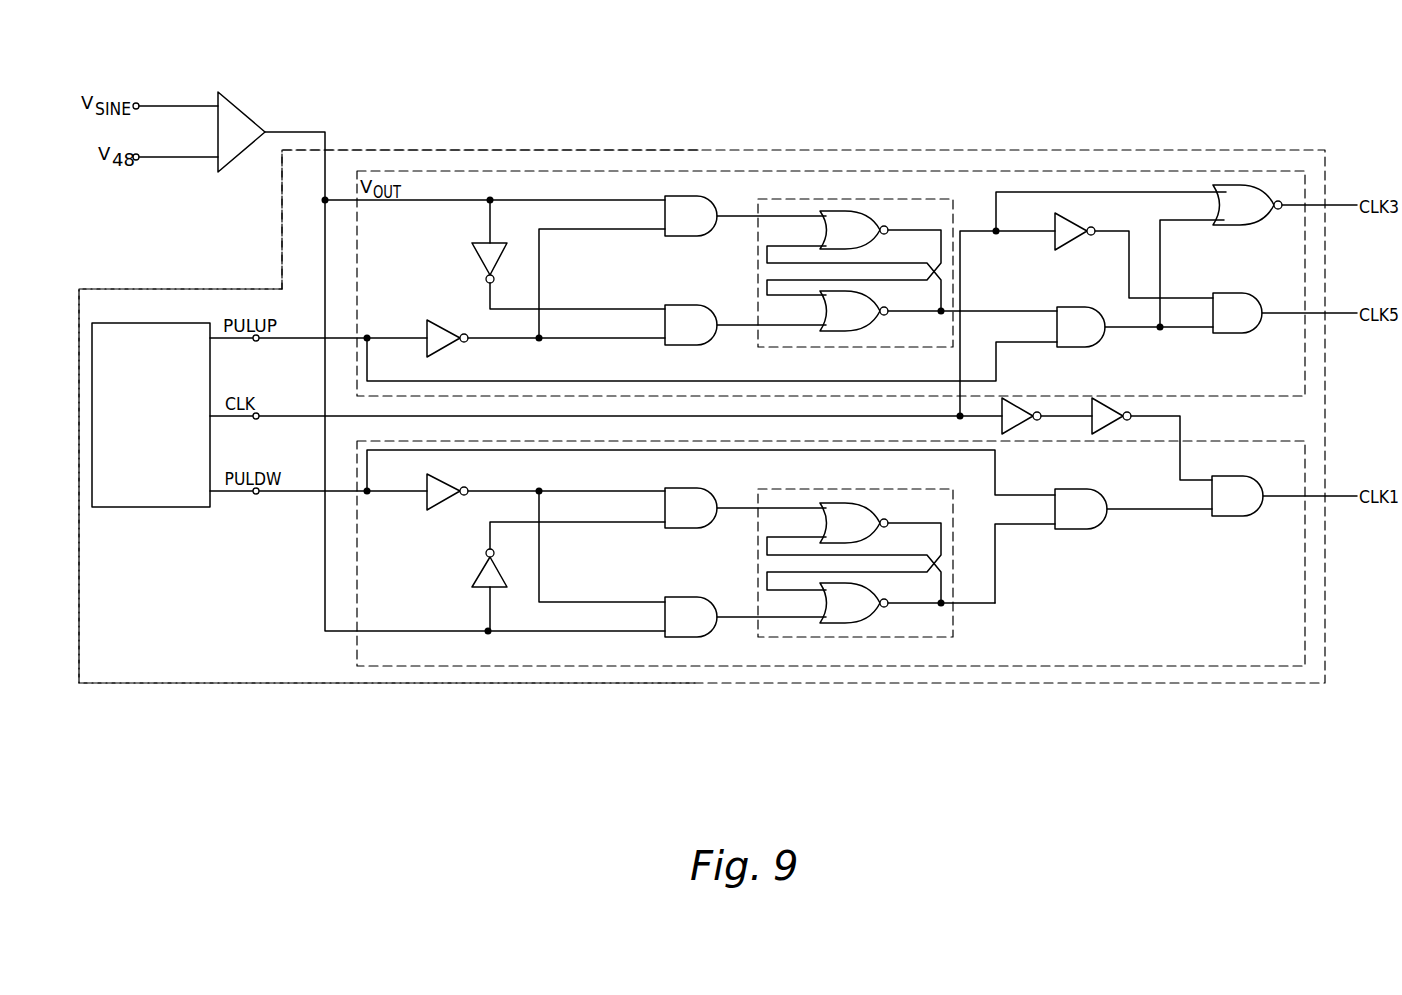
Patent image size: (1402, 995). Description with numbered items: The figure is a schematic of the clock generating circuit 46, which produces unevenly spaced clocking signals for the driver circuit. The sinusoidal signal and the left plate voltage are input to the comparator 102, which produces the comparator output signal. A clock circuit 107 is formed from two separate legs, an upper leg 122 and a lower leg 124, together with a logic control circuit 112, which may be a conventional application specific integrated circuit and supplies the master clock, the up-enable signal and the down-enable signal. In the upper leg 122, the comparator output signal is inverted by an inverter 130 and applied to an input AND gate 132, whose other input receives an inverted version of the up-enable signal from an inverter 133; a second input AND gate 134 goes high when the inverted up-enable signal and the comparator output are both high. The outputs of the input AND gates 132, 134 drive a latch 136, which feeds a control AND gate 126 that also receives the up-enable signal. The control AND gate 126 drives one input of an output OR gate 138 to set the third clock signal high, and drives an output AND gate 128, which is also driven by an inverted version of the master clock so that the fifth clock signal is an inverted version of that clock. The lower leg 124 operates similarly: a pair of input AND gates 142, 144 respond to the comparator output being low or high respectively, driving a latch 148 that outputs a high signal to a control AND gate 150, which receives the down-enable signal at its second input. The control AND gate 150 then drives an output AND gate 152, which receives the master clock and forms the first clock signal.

The clock generating circuit 46 is at (1303, 124).
The comparator 102 is at (245, 113).
The clock circuit 107 is at (180, 289).
The logic control circuit 112 is at (112, 323).
The upper leg 122 is at (452, 170).
The lower leg 124 is at (420, 665).
The control AND gate 126 is at (1072, 307).
The output AND gate 128 is at (1228, 334).
The inverter 130 is at (477, 262).
The input AND gate 132 is at (683, 305).
The inverter 133 is at (443, 322).
The input AND gate 134 is at (680, 196).
The latch 136 is at (870, 199).
The output OR gate 138 is at (1235, 226).
The upper input AND gate 142 is at (682, 530).
The lower input AND gate 144 is at (680, 640).
The latch 148 is at (855, 638).
The control AND gate 150 is at (1072, 531).
The output AND gate 152 is at (1228, 516).